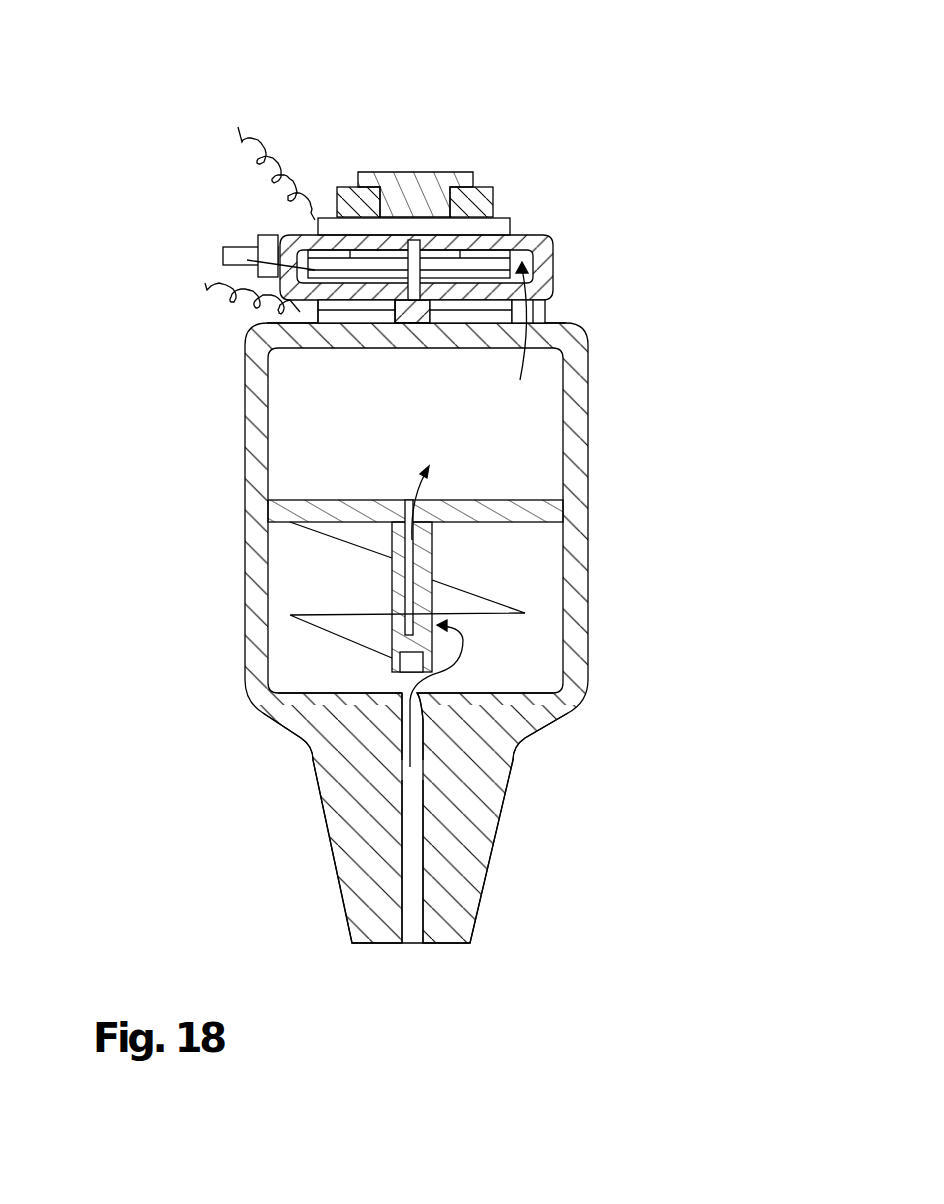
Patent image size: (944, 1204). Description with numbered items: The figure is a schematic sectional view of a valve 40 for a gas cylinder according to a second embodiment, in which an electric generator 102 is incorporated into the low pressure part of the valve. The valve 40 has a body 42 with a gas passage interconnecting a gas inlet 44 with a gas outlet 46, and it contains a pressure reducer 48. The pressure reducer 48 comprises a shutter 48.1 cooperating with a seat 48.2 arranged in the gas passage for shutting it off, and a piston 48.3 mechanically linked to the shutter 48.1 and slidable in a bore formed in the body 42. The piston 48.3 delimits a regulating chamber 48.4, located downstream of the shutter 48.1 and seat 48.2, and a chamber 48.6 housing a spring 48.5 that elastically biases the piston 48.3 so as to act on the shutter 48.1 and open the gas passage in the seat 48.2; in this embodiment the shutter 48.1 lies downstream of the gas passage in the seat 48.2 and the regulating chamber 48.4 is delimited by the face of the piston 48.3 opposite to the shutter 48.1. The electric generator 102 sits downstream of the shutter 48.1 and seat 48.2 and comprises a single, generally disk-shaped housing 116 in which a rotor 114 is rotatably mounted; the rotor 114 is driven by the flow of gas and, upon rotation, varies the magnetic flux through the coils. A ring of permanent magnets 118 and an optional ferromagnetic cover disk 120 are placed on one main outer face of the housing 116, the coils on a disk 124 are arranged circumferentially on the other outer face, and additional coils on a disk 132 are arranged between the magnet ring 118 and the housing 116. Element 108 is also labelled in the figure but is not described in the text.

The valve 40 is at (104, 156).
The electric generator 102 is at (385, 196).
The sensor 108 is at (233, 247).
The rotor 114 is at (247, 260).
The housing 116 is at (545, 245).
The ring of permanent magnets 118 is at (487, 198).
The cover disk 120 is at (410, 172).
The disk 124 is at (333, 312).
The disk 132 is at (318, 228).
The gas outlet 46 is at (533, 340).
The pressure reducer 48 is at (204, 511).
The shutter 48.1 is at (435, 662).
The seat 48.2 is at (400, 708).
The piston 48.3 is at (498, 522).
The regulating chamber 48.4 is at (528, 427).
The spring 48.5 is at (400, 660).
The chamber 48.6 is at (537, 627).
The body 42 is at (487, 800).
The gas inlet 44 is at (408, 918).